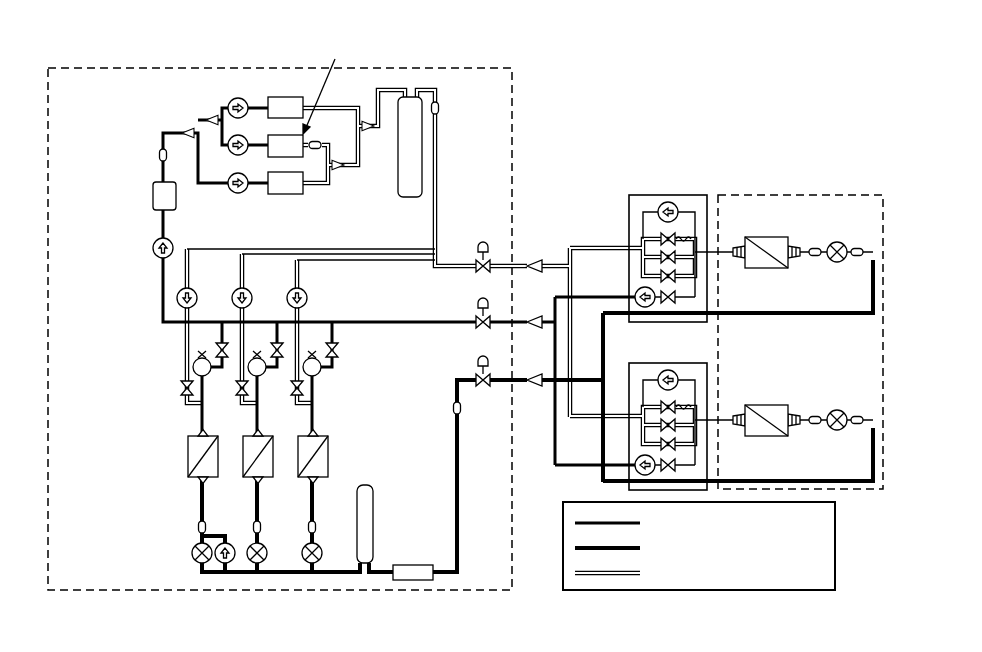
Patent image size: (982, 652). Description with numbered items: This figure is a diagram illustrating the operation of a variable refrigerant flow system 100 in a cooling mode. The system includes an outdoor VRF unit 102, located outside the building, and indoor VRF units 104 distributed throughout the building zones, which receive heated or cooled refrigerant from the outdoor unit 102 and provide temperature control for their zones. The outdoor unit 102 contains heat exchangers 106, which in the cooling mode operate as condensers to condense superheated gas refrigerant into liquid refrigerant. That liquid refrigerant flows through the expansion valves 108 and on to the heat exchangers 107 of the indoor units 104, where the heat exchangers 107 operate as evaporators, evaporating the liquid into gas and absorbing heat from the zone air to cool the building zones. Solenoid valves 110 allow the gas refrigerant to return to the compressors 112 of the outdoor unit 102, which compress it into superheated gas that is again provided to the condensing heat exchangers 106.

The variable refrigerant flow (VRF) system 100 is at (115, 34).
The outdoor VRF unit 102 is at (480, 68).
The indoor VRF unit 104 is at (852, 195).
The heat exchanger 106 is at (187, 446).
The heat exchanger 107 is at (762, 270).
The expansion valve (EEV) 108 is at (196, 544).
The solenoid valve 110 is at (186, 380).
The compressor 112 is at (282, 96).